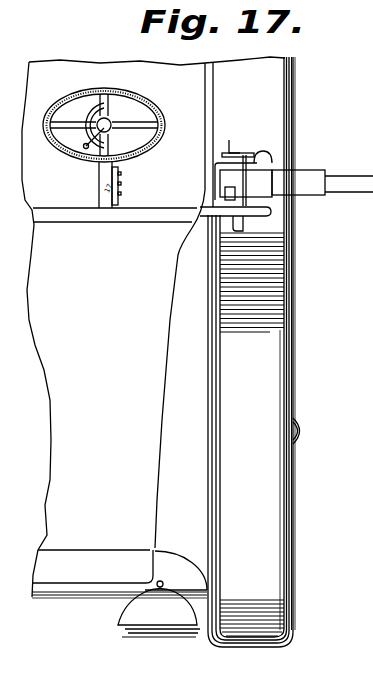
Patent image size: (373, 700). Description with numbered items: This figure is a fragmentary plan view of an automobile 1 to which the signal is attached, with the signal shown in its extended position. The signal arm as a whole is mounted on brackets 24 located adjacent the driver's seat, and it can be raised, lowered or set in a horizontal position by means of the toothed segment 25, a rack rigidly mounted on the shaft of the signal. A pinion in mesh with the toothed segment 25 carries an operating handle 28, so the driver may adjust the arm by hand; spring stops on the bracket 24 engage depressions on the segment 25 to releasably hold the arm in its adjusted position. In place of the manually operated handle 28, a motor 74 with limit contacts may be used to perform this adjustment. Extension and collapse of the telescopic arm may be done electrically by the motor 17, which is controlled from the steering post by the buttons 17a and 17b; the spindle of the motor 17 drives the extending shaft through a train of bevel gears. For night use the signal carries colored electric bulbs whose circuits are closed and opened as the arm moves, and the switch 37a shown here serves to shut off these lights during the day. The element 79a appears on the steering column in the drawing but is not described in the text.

The automobile 1 is at (292, 356).
The motor 17 is at (235, 193).
The button 17a is at (119, 172).
The button 17b is at (121, 192).
The bracket 24 is at (258, 162).
The toothed segment 25 is at (265, 161).
The operating handle 28 is at (233, 151).
The switch 37a is at (118, 200).
The motor 74 is at (238, 230).
The steering column 79a is at (100, 193).